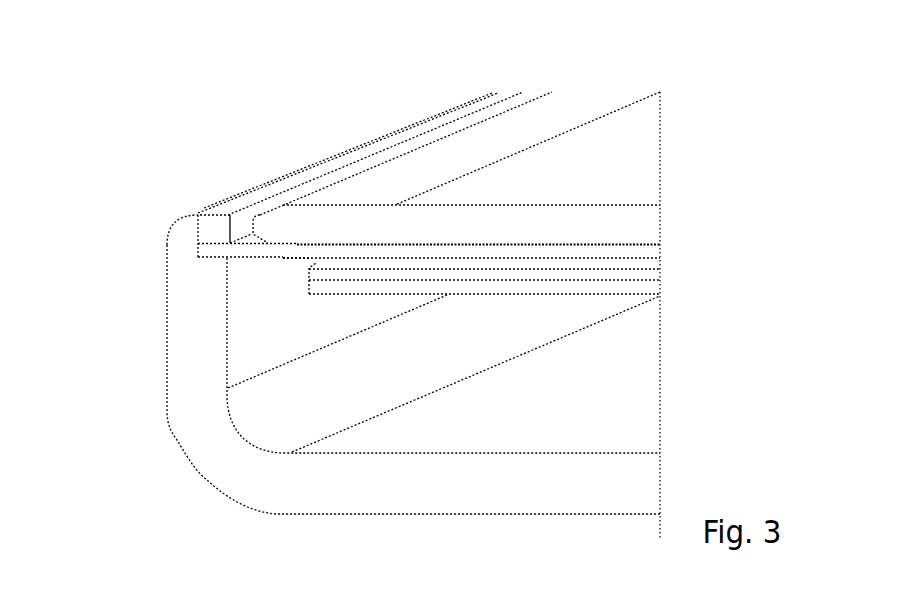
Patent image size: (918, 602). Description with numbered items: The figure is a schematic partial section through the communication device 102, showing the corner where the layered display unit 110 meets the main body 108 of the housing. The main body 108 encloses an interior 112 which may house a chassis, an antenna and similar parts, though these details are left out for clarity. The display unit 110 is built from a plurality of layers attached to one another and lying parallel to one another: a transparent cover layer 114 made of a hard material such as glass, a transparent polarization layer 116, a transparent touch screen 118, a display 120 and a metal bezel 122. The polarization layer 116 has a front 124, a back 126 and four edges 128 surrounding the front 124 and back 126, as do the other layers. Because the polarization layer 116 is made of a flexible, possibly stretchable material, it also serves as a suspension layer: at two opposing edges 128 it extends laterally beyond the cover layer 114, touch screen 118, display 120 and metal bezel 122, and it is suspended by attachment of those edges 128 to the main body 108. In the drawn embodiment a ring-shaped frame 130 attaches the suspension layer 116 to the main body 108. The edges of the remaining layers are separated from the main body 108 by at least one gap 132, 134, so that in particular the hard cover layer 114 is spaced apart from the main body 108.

The communication device 102 is at (722, 114).
The main body 108 is at (292, 487).
The display unit 110 is at (376, 177).
The interior 112 is at (578, 428).
The cover layer 114 is at (643, 222).
The polarization layer 116 is at (640, 256).
The touch screen 118 is at (650, 268).
The display 120 is at (650, 281).
The metal bezel 122 is at (657, 290).
The front 124 is at (268, 242).
The back 126 is at (282, 258).
The edges 128 is at (198, 247).
The ring-shaped frame 130 is at (213, 228).
The gap 132 is at (238, 227).
The gap 134 is at (260, 270).